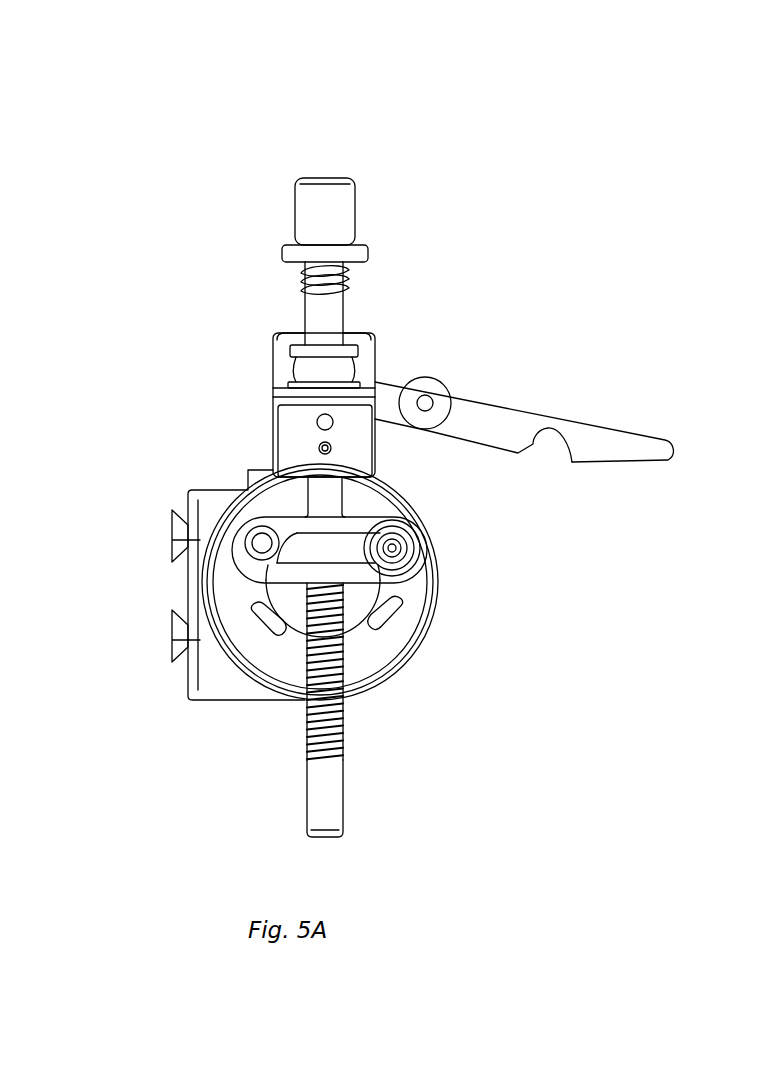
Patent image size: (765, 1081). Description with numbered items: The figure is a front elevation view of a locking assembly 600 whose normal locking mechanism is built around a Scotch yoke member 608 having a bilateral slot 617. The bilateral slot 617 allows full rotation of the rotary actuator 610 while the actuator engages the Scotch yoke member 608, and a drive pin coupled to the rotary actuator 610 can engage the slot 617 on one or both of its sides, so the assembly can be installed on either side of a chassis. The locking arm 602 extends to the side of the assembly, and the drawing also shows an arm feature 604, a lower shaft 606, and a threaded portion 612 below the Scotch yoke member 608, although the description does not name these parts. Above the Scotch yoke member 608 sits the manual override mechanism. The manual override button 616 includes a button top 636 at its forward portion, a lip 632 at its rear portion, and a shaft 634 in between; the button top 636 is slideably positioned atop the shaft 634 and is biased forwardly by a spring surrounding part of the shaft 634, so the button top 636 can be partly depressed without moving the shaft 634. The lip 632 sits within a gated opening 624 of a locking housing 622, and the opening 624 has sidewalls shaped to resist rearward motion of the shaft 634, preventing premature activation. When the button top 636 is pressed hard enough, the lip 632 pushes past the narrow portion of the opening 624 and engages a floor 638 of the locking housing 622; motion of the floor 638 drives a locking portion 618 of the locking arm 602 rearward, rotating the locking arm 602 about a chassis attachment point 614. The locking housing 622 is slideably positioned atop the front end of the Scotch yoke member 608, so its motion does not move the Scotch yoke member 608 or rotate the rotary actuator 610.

The locking assembly 600 is at (136, 90).
The locking arm 602 is at (490, 370).
The lever notch 604 is at (547, 433).
The screw shaft 606 is at (340, 795).
The Scotch yoke member 608 is at (410, 604).
The rotary actuator 610 is at (435, 548).
The threaded portion 612 is at (305, 714).
The chassis attachment point 614 is at (427, 398).
The manual override button 616 is at (386, 194).
The bilateral slot 617 is at (413, 568).
The locking portion 618 is at (637, 447).
The locking housing 622 is at (262, 330).
The gated opening 624 is at (300, 370).
The lip 632 is at (347, 337).
The shaft 634 is at (322, 309).
The button top 636 is at (316, 216).
The floor 638 is at (325, 390).